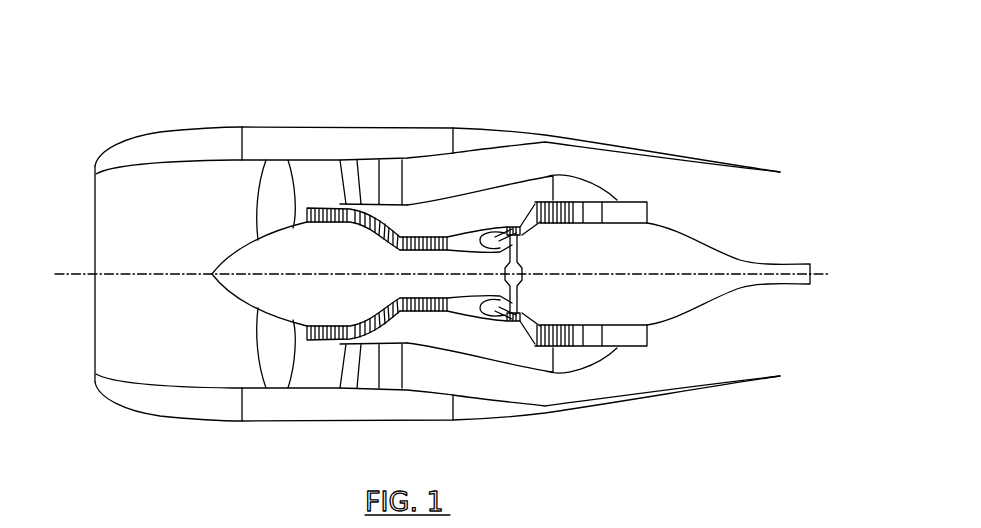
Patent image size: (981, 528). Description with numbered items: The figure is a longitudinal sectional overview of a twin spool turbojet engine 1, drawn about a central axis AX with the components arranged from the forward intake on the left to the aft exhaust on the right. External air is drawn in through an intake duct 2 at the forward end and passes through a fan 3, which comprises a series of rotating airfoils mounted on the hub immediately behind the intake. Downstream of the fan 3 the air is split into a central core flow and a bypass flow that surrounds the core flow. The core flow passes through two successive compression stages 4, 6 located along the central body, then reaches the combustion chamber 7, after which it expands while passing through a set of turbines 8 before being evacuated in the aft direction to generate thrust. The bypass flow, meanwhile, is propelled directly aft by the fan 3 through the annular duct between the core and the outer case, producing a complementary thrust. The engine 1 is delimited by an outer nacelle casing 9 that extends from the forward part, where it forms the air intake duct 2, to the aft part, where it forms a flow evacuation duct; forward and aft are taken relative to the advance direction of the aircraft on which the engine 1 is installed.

The engine 1 is at (239, 80).
The intake duct 2 is at (144, 274).
The fan 3 is at (277, 348).
The compression stage 4 is at (322, 198).
The compression stage 6 is at (428, 226).
The combustion chamber 7 is at (510, 216).
The set of turbines 8 is at (564, 196).
The nacelle 9 is at (369, 140).
The longitudinal axis AX is at (75, 272).